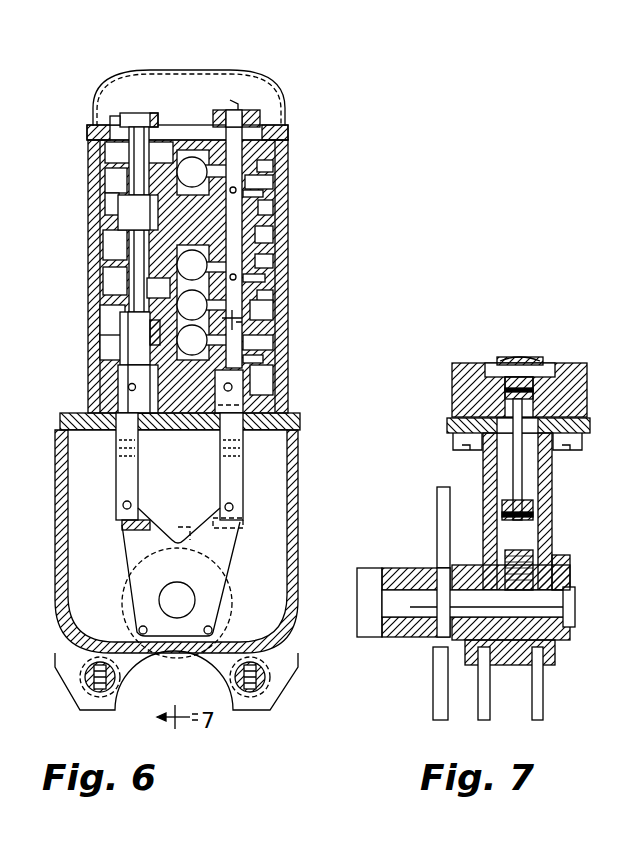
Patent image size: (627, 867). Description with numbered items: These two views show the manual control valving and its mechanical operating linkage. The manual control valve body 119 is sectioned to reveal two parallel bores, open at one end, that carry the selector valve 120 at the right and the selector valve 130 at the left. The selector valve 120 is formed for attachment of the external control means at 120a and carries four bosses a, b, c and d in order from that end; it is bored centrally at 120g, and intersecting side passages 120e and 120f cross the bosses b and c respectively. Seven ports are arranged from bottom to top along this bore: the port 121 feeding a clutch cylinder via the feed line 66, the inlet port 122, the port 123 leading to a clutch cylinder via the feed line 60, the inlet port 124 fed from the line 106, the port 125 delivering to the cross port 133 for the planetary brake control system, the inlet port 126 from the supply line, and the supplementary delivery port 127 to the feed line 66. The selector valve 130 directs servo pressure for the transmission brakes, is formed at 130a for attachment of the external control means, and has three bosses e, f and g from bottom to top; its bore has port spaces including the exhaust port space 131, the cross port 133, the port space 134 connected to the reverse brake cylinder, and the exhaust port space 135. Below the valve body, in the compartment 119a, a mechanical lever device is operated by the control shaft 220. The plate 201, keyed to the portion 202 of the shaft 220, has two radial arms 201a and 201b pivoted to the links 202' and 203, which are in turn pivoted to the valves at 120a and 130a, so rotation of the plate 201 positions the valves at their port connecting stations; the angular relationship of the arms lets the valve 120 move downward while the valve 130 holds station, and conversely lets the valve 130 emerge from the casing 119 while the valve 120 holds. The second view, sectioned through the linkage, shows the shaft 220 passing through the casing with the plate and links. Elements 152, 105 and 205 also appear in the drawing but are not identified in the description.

In FIG. 6, the manual control valve body 119 is at (278, 150).
In FIG. 7, the manual control valve body 119 is at (470, 388).
In FIG. 6, the compartment 119a is at (290, 470).
In FIG. 7, the compartment 119a is at (485, 465).
In FIG. 6, the selector valve 120 is at (255, 113).
In FIG. 7, the selector valve 120 is at (540, 360).
In FIG. 6, the attachment portion of selector valve 120a is at (243, 388).
In FIG. 7, the attachment portion of selector valve 120a is at (505, 393).
In FIG. 6, the side passage 120e is at (252, 278).
In FIG. 6, the side passage 120f is at (252, 193).
In FIG. 6, the central bore 120g is at (237, 110).
In FIG. 6, the port 121 is at (262, 376).
In FIG. 6, the inlet port 122 is at (265, 343).
In FIG. 6, the port 123 is at (260, 312).
In FIG. 6, the inlet port 124 is at (262, 262).
In FIG. 6, the port 125 is at (262, 237).
In FIG. 6, the inlet port 126 is at (263, 208).
In FIG. 6, the supplementary delivery port 127 is at (265, 181).
In FIG. 6, the selector valve 130 is at (148, 113).
In FIG. 6, the attachment portion of selector valve 130a is at (128, 387).
In FIG. 6, the port space 131 is at (103, 345).
In FIG. 6, the cross port 133 is at (108, 240).
In FIG. 6, the port space 134 is at (110, 185).
In FIG. 6, the port space 135 is at (108, 152).
In FIG. 6, the chamber 152 is at (108, 278).
In FIG. 6, the feed line 60 is at (158, 288).
In FIG. 6, the feed line 66 is at (193, 160).
In FIG. 6, the piston 105 is at (140, 338).
In FIG. 6, the line 106 is at (138, 212).
In FIG. 6, the plate 201 is at (150, 590).
In FIG. 7, the plate 201 is at (505, 505).
In FIG. 6, the radial arm 201a is at (133, 537).
In FIG. 6, the radial arm 201b is at (225, 528).
In FIG. 7, the radial arm 201b is at (556, 548).
In FIG. 7, the shaft portion 202 is at (497, 558).
In FIG. 6, the link 202' is at (152, 466).
In FIG. 6, the link 203 is at (228, 478).
In FIG. 7, the link 203 is at (522, 475).
In FIG. 7, the plate 205 is at (440, 527).
In FIG. 6, the control shaft 220 is at (185, 603).
In FIG. 7, the control shaft 220 is at (398, 568).
In FIG. 6, the boss a is at (258, 360).
In FIG. 6, the boss b is at (263, 301).
In FIG. 6, the boss c is at (262, 167).
In FIG. 6, the boss d is at (258, 125).
In FIG. 6, the boss e is at (108, 312).
In FIG. 6, the boss f is at (110, 200).
In FIG. 6, the boss g is at (118, 118).